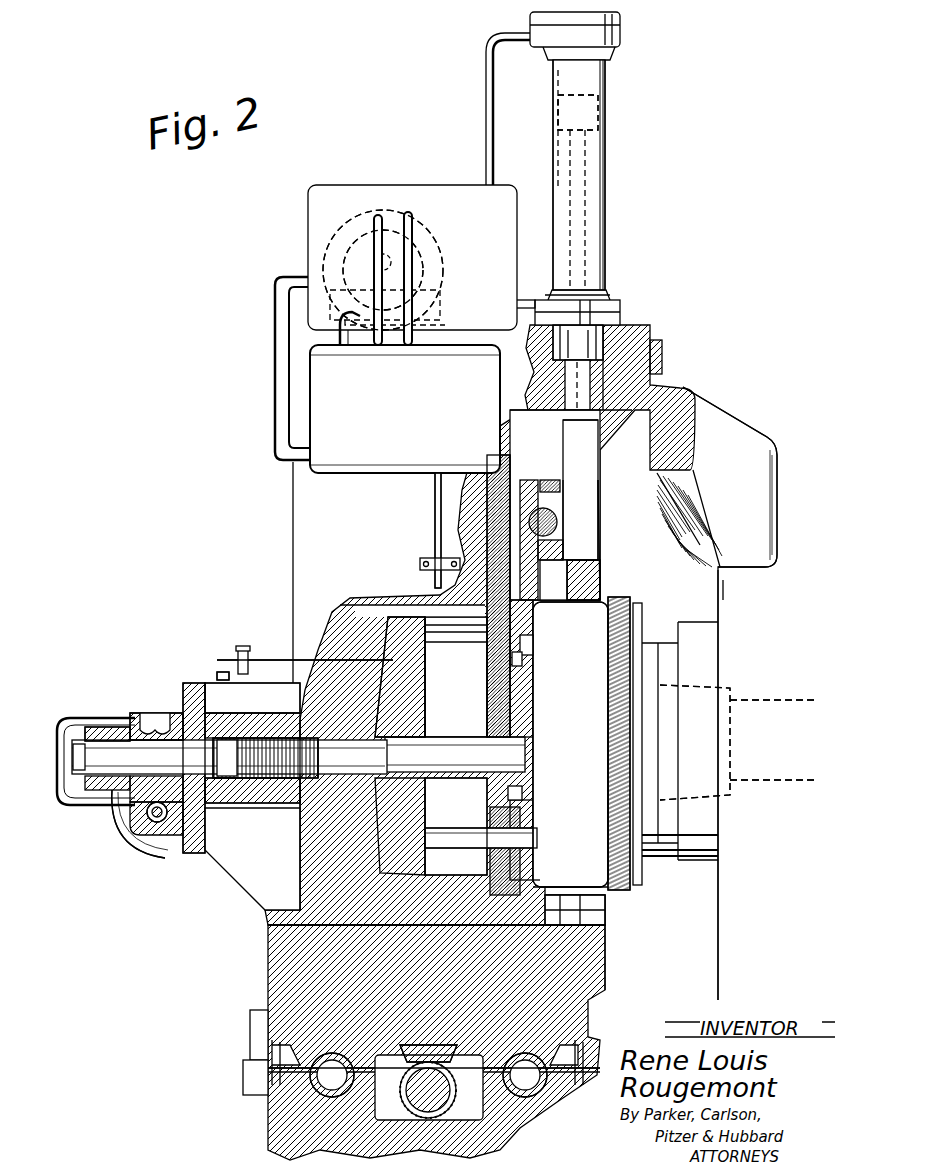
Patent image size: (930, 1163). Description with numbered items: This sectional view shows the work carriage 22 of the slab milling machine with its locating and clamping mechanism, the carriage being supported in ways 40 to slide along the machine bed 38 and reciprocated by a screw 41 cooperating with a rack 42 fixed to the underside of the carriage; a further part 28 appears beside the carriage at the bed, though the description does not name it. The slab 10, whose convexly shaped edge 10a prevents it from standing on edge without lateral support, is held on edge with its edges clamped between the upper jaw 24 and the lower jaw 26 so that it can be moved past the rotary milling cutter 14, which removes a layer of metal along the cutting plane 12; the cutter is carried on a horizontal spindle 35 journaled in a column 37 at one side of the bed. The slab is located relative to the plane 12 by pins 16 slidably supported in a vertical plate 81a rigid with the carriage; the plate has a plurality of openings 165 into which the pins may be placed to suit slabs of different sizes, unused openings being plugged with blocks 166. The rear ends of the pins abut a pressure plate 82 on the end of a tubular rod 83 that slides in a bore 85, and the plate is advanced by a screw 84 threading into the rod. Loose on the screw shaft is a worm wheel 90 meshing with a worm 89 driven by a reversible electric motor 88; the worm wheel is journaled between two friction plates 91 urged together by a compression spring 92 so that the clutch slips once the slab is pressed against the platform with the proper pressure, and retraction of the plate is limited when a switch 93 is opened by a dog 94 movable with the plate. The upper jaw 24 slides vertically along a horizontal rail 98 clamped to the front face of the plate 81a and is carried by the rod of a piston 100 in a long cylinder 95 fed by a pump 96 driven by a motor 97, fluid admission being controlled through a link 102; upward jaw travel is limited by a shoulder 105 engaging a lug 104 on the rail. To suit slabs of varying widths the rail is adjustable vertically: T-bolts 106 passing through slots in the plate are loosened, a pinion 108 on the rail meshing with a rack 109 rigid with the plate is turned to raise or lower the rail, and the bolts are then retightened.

The piston 100 is at (600, 108).
The cylinder 95 is at (606, 148).
The pump 96 is at (362, 250).
The motor 97 is at (436, 246).
The link 102 is at (435, 520).
The T-bolt 106 is at (548, 490).
The pinion 108 is at (552, 518).
The lug 104 is at (572, 520).
The shoulder 105 is at (580, 543).
The horizontal rail 98 is at (560, 575).
The upper jaw 24 is at (582, 592).
The column 37 is at (718, 590).
The horizontal spindle 35 is at (773, 698).
The dog 94 is at (272, 652).
The friction plate 91 is at (115, 722).
The switch 93 is at (192, 688).
The worm wheel 90 is at (156, 712).
The compression spring 92 is at (108, 722).
The bore 85 is at (265, 803).
The screw 84 is at (245, 798).
The tubular rod 83 is at (330, 795).
The worm 89 is at (140, 822).
The reversible electric motor 88 is at (152, 848).
The pin 16 is at (475, 850).
The pressure plate 82 is at (418, 695).
The vertical plate 81a is at (493, 710).
The rack 109 is at (528, 655).
The block 166 is at (522, 800).
The slab 10 is at (582, 752).
The opening 165 is at (495, 828).
The cutting plane 12 is at (608, 828).
The rotary milling cutter 14 is at (638, 870).
The lower jaw 26 is at (600, 905).
The work carriage 22 is at (273, 962).
The convexly shaped edge 10a is at (540, 905).
The support 28 is at (632, 968).
The machine bed 38 is at (285, 1133).
The way 40 is at (575, 1105).
The screw 41 is at (410, 1098).
The rack 42 is at (447, 1082).